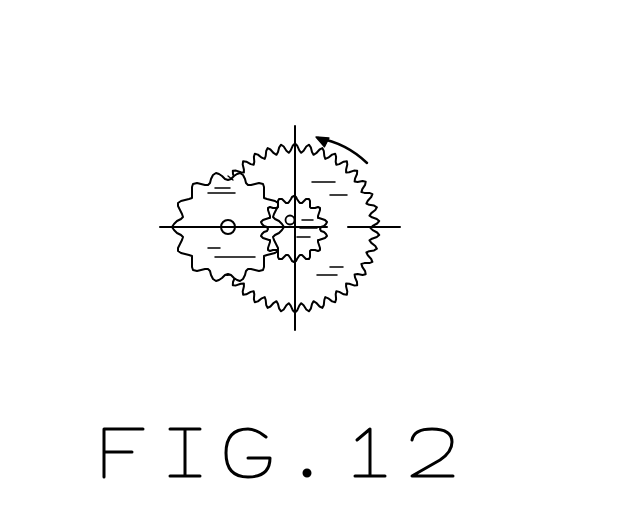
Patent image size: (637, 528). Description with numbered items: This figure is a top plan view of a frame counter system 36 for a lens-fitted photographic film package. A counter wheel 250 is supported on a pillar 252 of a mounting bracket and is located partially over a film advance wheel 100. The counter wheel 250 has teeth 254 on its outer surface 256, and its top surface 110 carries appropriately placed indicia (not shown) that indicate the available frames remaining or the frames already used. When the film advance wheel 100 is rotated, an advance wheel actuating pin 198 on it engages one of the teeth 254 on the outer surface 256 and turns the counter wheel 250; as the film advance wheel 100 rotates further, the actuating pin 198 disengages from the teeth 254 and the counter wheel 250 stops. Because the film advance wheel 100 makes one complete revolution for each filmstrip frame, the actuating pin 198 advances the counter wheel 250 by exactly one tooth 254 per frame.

The frame counter system 36 is at (357, 113).
The film advance wheel 100 is at (342, 280).
The top surface 110 is at (193, 205).
The advance wheel actuating pin 198 is at (290, 219).
The counter wheel 250 is at (207, 178).
The pillar 252 is at (225, 232).
The teeth 254 is at (230, 177).
The outer surface 256 is at (173, 224).